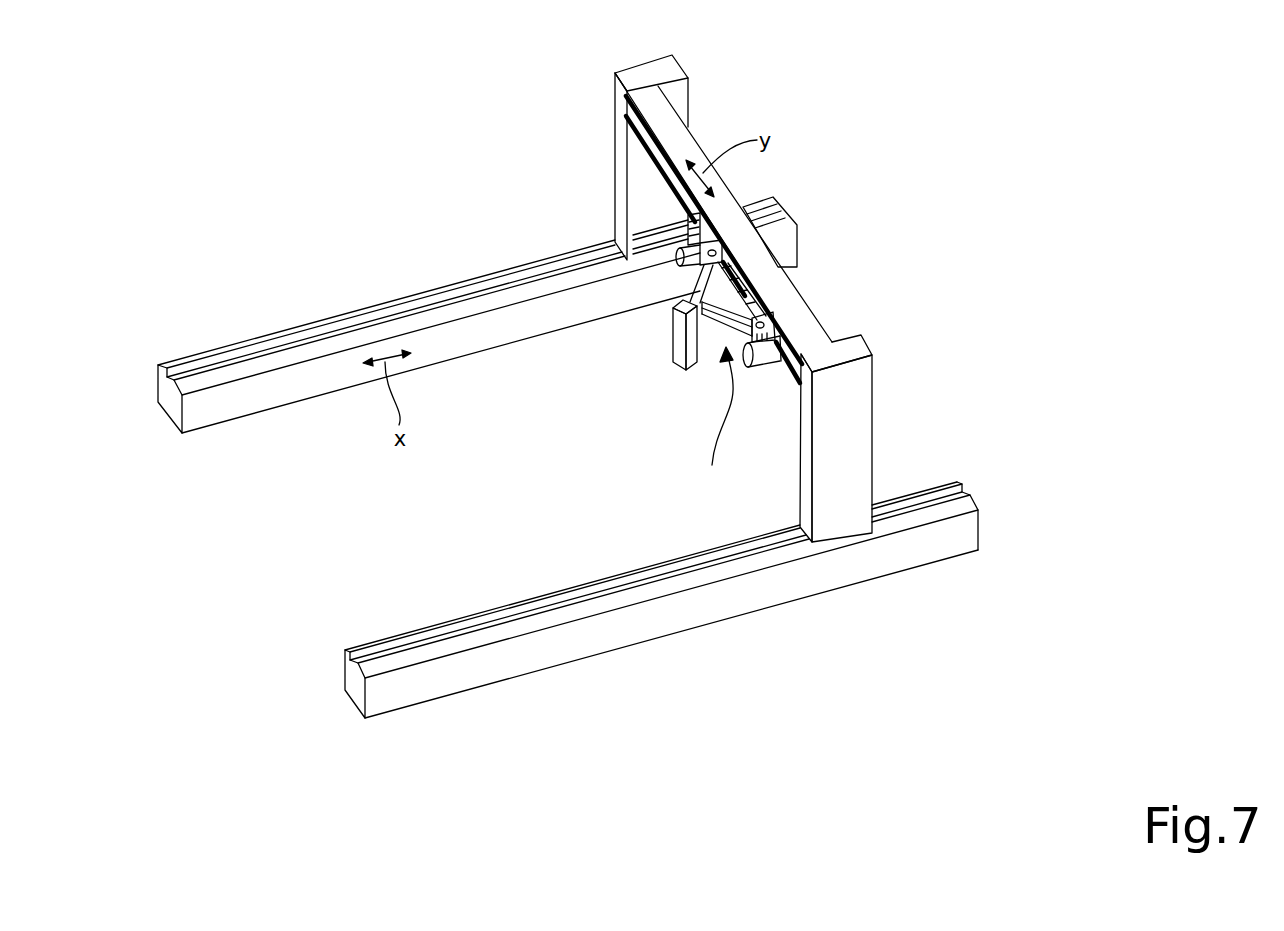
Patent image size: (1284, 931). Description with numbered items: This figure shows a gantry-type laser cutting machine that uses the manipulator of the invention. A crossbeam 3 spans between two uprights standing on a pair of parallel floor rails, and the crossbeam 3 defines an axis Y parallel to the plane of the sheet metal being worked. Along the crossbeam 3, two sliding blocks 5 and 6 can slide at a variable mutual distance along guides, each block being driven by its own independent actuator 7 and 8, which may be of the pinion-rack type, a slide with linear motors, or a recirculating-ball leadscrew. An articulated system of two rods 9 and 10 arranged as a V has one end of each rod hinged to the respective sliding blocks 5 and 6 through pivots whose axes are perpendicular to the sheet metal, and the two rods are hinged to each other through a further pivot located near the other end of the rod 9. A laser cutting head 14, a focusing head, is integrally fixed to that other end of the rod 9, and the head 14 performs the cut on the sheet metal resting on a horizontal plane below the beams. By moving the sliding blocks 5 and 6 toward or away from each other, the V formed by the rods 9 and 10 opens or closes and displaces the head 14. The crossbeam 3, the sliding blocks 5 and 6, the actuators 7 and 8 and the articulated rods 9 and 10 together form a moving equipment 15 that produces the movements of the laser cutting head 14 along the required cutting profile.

The crossbeam 3 is at (683, 138).
The sliding block 5 is at (716, 253).
The sliding block 6 is at (773, 323).
The actuator 7 is at (700, 278).
The actuator 8 is at (763, 360).
The rod 9 is at (706, 290).
The rod 10 is at (767, 287).
The laser cutting head 14 is at (683, 338).
The moving equipment 15 is at (717, 420).